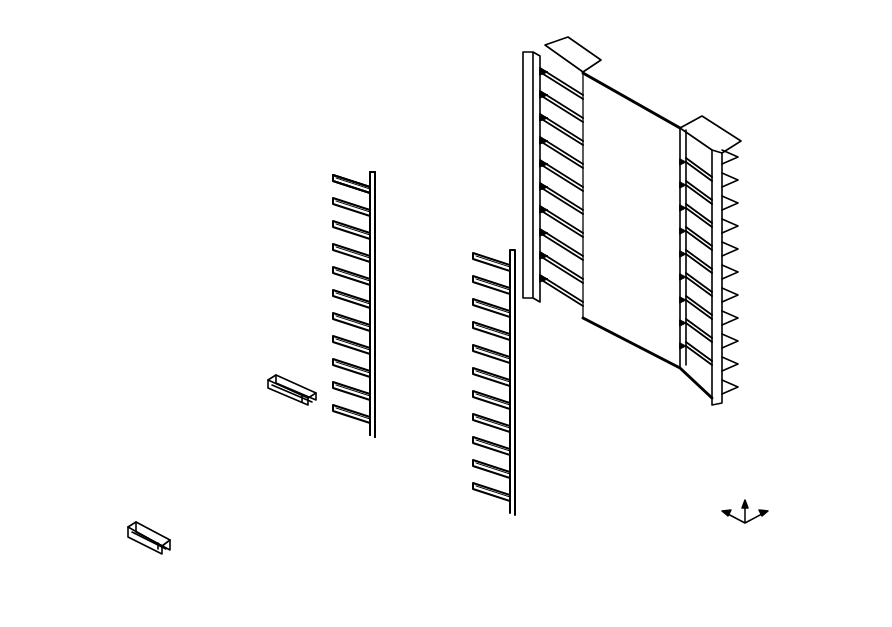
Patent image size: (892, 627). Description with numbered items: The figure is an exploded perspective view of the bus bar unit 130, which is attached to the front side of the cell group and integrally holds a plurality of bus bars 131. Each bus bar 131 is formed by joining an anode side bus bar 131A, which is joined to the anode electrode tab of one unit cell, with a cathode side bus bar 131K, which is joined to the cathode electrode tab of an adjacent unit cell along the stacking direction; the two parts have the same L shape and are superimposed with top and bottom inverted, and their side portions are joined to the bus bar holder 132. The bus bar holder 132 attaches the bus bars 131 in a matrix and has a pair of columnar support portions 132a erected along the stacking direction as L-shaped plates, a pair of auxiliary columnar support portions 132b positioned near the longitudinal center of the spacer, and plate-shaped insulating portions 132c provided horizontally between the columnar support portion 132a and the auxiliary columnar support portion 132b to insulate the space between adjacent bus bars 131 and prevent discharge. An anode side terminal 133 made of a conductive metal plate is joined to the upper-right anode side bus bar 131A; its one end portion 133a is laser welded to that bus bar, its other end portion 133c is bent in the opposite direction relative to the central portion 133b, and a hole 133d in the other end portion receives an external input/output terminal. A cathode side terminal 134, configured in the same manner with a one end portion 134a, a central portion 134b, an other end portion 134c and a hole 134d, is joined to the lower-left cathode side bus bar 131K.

The bus bar unit 130 is at (120, 61).
The bus bar 131 is at (266, 212).
The anode side bus bar 131A is at (338, 222).
The cathode side bus bar 131K is at (336, 186).
The bus bar holder 132 is at (516, 68).
The columnar support portion 132a is at (540, 135).
The auxiliary columnar support portion 132b is at (593, 72).
The insulating portion 132c is at (572, 82).
The anode side terminal 133 is at (258, 369).
The one end portion 133a is at (270, 383).
The central portion 133b is at (310, 400).
The other end portion 133c is at (283, 392).
The hole 133d is at (285, 394).
The cathode side terminal 134 is at (130, 483).
The one end portion 134a is at (150, 530).
The central portion 134b is at (168, 548).
The other end portion 134c is at (133, 530).
The hole 134d is at (138, 547).